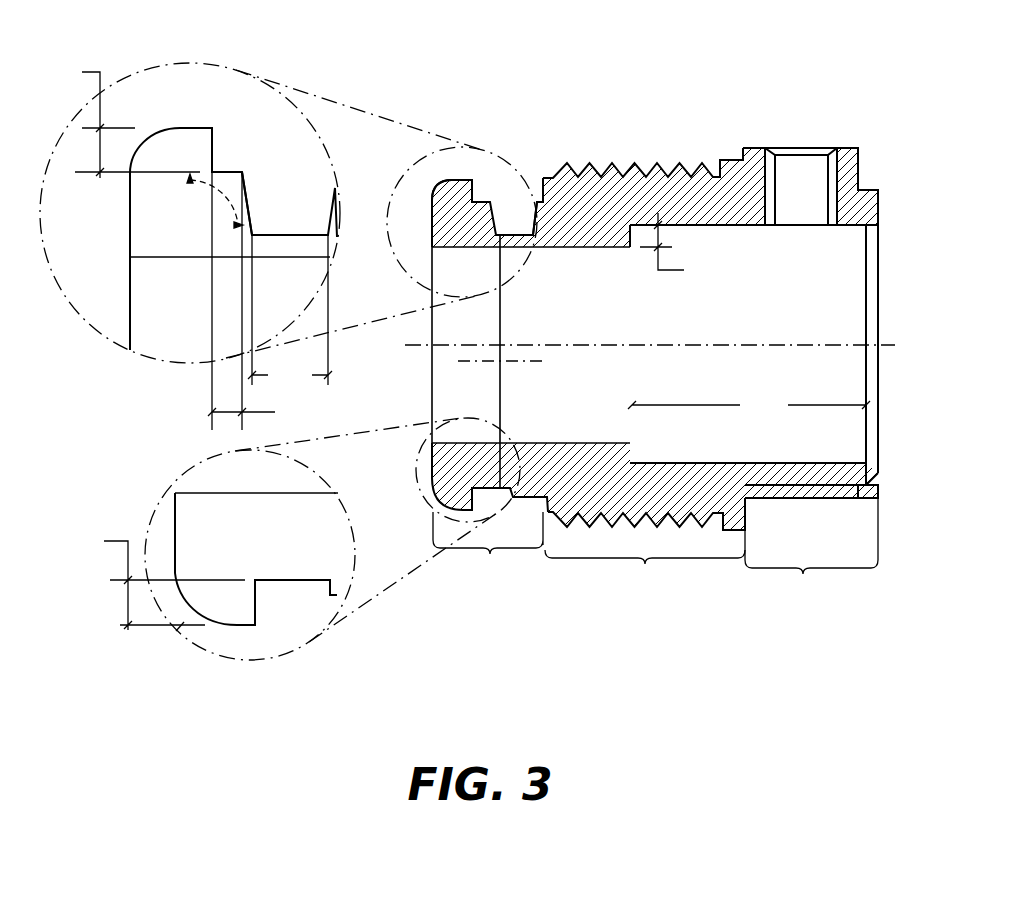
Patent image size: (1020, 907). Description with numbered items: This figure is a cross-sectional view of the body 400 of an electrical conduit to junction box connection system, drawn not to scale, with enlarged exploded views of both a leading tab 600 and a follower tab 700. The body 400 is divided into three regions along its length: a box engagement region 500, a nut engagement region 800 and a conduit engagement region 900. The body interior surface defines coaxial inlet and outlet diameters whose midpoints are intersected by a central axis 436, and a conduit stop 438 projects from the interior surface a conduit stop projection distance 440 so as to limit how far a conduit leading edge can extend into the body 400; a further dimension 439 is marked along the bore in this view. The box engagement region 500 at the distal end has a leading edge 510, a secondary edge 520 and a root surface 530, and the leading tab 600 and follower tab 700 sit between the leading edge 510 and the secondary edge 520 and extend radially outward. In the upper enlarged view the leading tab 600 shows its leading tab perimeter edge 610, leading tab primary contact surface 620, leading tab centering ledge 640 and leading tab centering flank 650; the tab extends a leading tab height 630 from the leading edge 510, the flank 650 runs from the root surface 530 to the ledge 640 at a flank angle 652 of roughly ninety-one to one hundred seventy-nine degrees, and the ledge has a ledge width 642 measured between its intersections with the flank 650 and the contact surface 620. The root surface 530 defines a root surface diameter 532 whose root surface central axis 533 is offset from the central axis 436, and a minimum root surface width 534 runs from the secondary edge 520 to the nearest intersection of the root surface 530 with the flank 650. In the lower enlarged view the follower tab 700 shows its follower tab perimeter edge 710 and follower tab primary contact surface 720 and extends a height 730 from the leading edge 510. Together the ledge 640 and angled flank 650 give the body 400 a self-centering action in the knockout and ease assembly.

The body 400 is at (758, 148).
The central axis 436 is at (405, 345).
The conduit stop 438 is at (633, 460).
The pipe insertion length 439 is at (749, 405).
The conduit stop projection distance 440 is at (687, 248).
The box engagement region 500 is at (490, 554).
The leading edge 510 is at (430, 220).
The secondary edge 520 is at (543, 198).
The root surface 530 is at (388, 124).
The root surface diameter 532 is at (497, 398).
The root surface central axis 533 is at (458, 363).
The minimum root surface width 534 is at (290, 375).
The leading tab 600 is at (157, 138).
The leading tab perimeter edge 610 is at (192, 130).
The leading tab primary contact surface 620 is at (222, 153).
The leading tab height 630 is at (118, 119).
The leading tab centering ledge 640 is at (242, 173).
The leading tab centering flank 650 is at (296, 235).
The flank angle 652 is at (205, 212).
The ledge width 642 is at (265, 412).
The follower tab 700 is at (195, 610).
The follower tab perimeter edge 710 is at (233, 626).
The follower tab primary contact surface 720 is at (260, 603).
The follower tab height 730 is at (152, 578).
The nut engagement region 800 is at (645, 564).
The conduit engagement region 900 is at (803, 574).